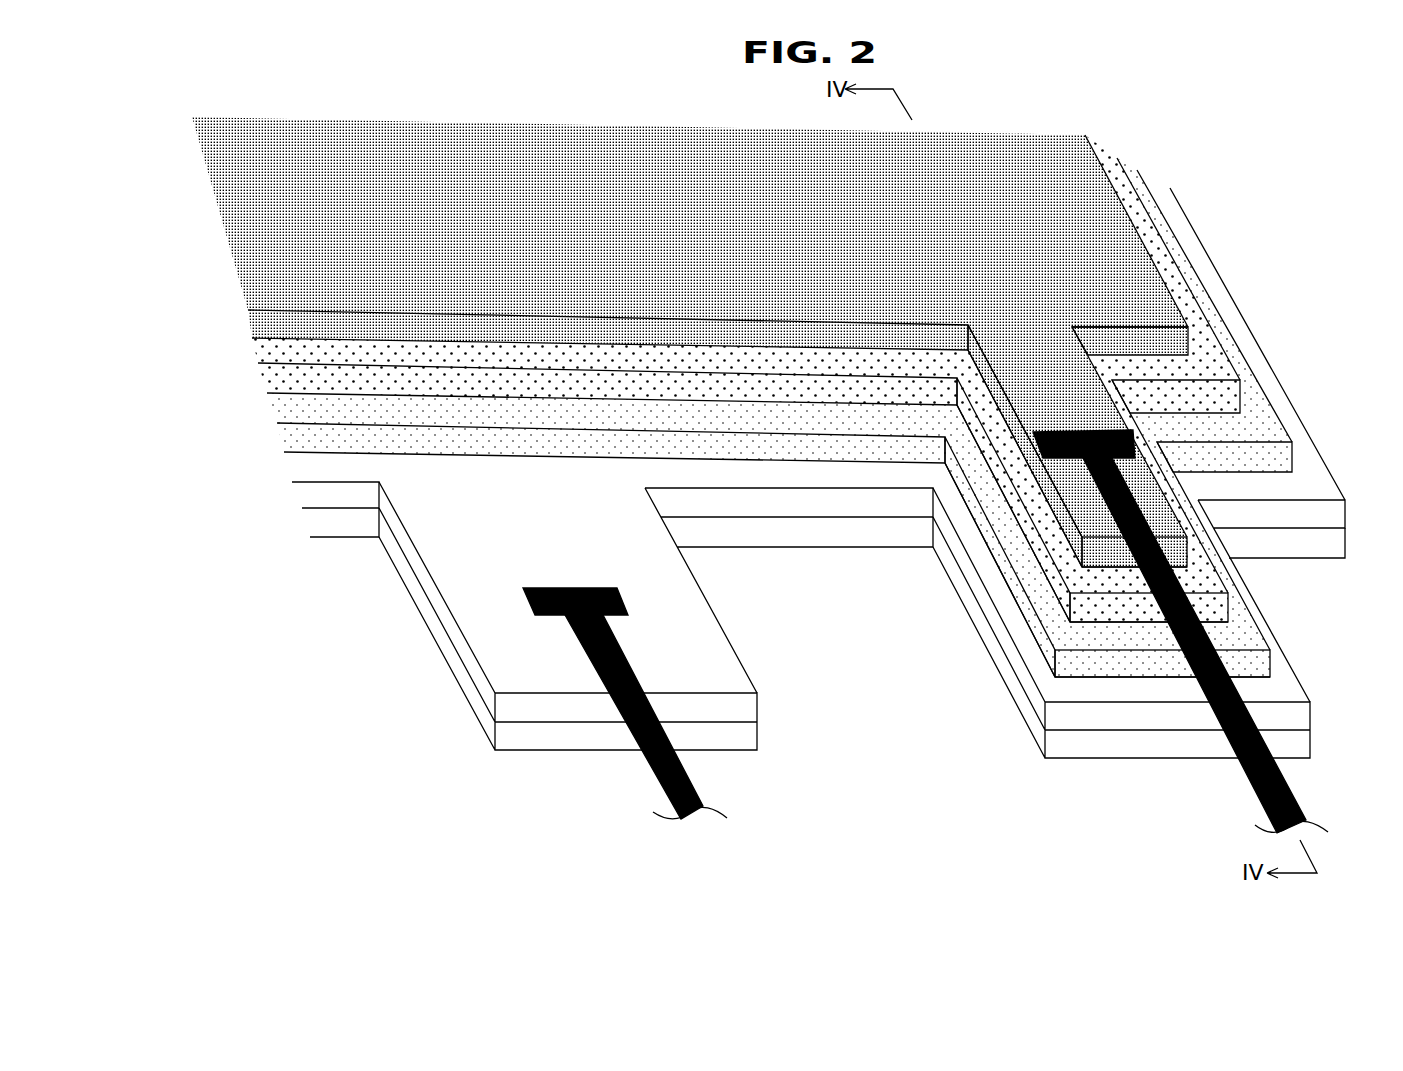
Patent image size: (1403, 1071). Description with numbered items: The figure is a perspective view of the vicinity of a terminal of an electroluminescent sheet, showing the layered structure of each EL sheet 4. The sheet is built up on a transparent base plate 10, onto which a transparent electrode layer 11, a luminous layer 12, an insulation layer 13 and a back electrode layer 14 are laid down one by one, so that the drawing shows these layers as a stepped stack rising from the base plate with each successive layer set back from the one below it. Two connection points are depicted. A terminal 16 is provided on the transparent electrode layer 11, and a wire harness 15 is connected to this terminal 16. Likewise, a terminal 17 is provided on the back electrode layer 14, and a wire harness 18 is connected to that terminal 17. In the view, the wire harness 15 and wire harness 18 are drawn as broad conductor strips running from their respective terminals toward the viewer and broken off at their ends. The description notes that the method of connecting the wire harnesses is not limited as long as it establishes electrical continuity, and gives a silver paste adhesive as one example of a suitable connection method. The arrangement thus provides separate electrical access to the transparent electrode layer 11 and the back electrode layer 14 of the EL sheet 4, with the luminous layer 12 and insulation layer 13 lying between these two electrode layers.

The EL sheet 4 is at (1206, 146).
The transparent base plate 10 is at (1300, 543).
The transparent electrode layer 11 is at (1257, 517).
The luminous layer 12 is at (1237, 412).
The insulation layer 13 is at (1203, 360).
The back electrode layer 14 is at (1150, 293).
The wire harness 15 is at (618, 648).
The terminal 16 is at (650, 578).
The terminal 17 is at (1047, 405).
The wire harness 18 is at (1252, 780).